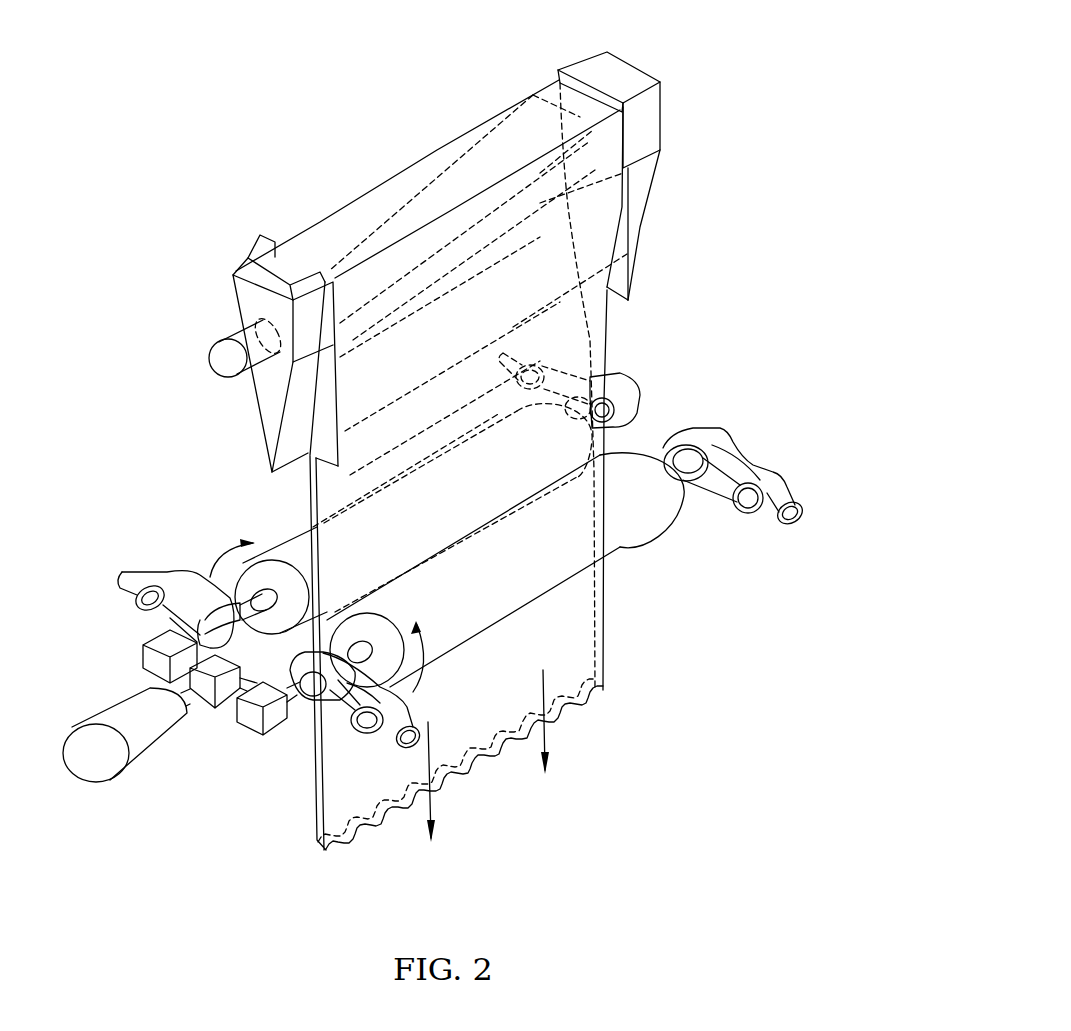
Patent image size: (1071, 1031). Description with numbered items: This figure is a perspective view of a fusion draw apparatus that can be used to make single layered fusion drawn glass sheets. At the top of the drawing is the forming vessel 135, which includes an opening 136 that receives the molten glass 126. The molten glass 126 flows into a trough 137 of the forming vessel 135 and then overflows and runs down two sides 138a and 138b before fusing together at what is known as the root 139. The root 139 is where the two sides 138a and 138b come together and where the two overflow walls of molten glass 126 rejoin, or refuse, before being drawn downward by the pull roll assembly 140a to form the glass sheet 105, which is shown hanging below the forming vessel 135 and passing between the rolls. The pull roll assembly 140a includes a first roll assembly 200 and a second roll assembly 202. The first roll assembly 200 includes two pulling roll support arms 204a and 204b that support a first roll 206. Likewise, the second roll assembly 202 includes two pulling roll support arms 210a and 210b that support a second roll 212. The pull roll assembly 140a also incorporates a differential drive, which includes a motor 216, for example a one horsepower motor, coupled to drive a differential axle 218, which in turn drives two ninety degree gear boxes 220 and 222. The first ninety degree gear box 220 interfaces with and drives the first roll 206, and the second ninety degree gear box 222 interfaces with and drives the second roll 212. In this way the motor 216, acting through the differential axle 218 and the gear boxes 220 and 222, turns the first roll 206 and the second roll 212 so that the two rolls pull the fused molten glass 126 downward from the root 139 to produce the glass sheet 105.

The forming vessel 135 is at (682, 38).
The trough 137 is at (508, 185).
The root 139 is at (607, 289).
The molten glass 126 is at (572, 317).
The opening 136 is at (227, 357).
The side 138a is at (262, 455).
The side 138b is at (295, 420).
The glass sheet 105 is at (317, 808).
The second roll 212 is at (297, 530).
The first roll 206 is at (633, 543).
The pulling roll support arm 210b is at (640, 399).
The second roll assembly 202 is at (643, 372).
The pull roll assembly 140a is at (734, 441).
The first roll assembly 200 is at (734, 467).
The pulling roll support arm 204b is at (743, 513).
The pulling roll support arm 204a is at (362, 730).
The pulling roll support arm 210a is at (135, 605).
The second 90° gear box 222 is at (143, 652).
The differential axle 218 is at (208, 707).
The first 90° gear box 220 is at (252, 730).
The motor 216 is at (117, 697).